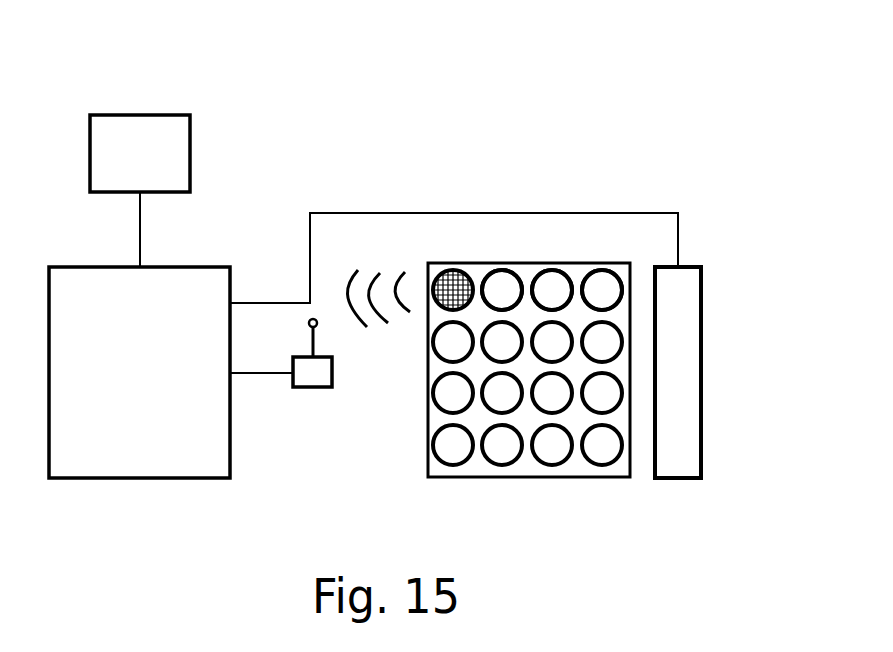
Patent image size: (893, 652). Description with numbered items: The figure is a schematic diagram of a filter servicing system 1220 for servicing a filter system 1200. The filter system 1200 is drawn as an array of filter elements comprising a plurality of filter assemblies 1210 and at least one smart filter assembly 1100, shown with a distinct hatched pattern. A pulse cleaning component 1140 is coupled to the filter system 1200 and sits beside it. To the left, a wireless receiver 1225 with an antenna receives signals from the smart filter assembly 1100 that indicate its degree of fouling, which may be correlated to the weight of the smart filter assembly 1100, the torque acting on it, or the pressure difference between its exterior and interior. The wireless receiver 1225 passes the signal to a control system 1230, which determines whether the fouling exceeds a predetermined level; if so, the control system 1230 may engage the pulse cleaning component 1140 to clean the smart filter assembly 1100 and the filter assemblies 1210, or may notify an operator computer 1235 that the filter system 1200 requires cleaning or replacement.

The filter servicing system 1220 is at (404, 124).
The operator computer 1235 is at (140, 191).
The control system 1230 is at (139, 372).
The wireless receiver 1225 is at (313, 388).
The filter system 1200 is at (420, 468).
The smart filter assembly 1100 is at (452, 263).
The filter assemblies 1210 is at (502, 263).
The pulse cleaning component 1140 is at (700, 265).